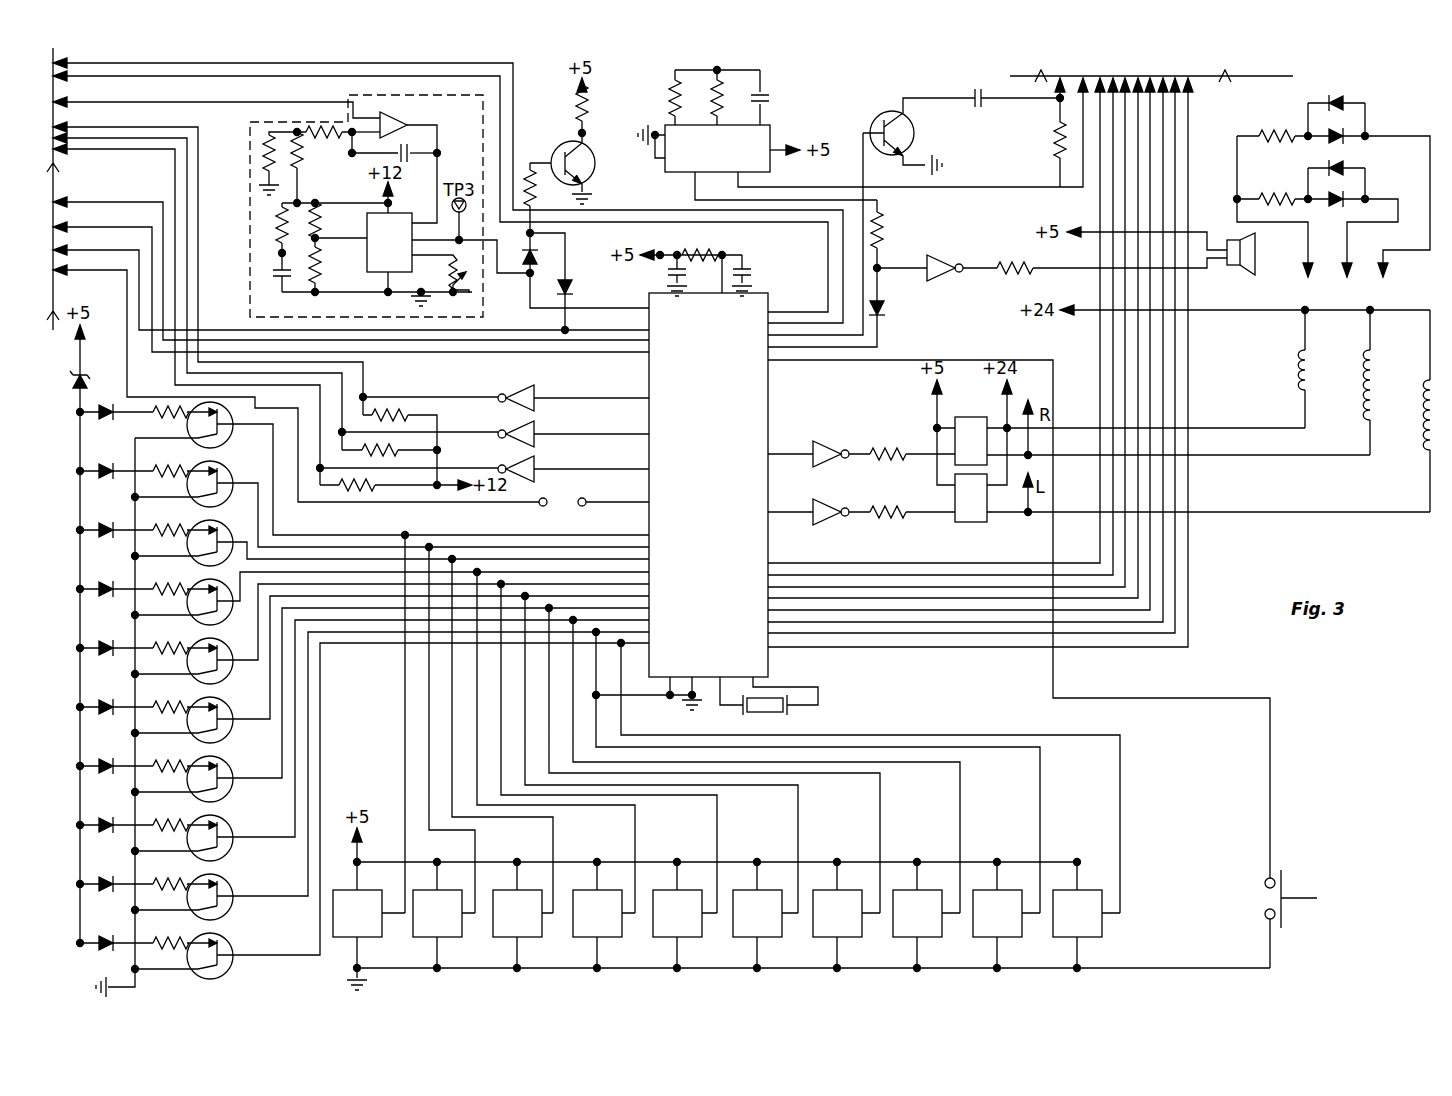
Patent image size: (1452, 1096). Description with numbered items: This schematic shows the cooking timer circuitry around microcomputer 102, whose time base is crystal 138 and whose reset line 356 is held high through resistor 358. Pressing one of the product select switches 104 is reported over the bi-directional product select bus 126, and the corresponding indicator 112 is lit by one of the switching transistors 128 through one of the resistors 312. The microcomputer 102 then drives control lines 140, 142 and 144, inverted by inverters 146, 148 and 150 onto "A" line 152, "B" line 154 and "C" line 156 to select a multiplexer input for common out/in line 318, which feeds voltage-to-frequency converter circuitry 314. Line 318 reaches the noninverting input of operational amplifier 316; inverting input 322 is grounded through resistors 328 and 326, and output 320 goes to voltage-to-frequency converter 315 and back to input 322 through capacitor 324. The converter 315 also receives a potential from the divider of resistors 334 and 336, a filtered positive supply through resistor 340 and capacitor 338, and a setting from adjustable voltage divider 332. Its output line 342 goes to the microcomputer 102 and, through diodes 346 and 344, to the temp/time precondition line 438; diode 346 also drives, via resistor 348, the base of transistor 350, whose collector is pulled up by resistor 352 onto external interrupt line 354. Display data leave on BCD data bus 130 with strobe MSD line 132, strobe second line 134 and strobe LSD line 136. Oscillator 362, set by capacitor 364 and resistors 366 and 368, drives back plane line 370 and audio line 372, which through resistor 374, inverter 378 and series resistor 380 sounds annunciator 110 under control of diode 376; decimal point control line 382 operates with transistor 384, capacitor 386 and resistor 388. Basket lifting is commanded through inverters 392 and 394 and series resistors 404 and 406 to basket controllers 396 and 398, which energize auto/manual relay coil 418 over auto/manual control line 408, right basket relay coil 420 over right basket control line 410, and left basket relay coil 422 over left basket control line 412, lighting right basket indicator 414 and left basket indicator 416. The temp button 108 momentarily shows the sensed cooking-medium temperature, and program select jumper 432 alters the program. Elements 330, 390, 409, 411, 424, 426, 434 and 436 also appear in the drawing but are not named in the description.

The microcomputer 102 is at (708, 485).
The product select switches 104 is at (787, 978).
The temp button 108 is at (1284, 880).
The annunciator 110 is at (1244, 268).
The indicators 112 is at (96, 438).
The product select bus 126 is at (368, 532).
The switching transistors 128 is at (228, 438).
The BCD data bus 130 is at (908, 616).
The strobe MSD line 132 is at (778, 560).
The strobe second line 134 is at (832, 560).
The strobe LSD line 136 is at (880, 566).
The crystal 138 is at (782, 712).
The control line 140 is at (596, 470).
The control line 142 is at (634, 432).
The control line 144 is at (630, 400).
The inverter 146 is at (536, 466).
The inverter 148 is at (536, 430).
The inverter 150 is at (534, 396).
The "A" line 152 is at (117, 152).
The "B" line 154 is at (136, 148).
The "C" line 156 is at (141, 126).
The resistors 312 is at (182, 404).
The voltage-to-frequency converter circuitry 314 is at (248, 273).
The voltage-to-frequency converter 315 is at (389, 242).
The operational amplifier 316 is at (396, 120).
The common out/in line 318 is at (205, 104).
The output 320 is at (439, 138).
The inverting input 322 is at (359, 151).
The capacitor 324 is at (414, 158).
The resistor 326 is at (316, 138).
The resistor 328 is at (262, 161).
The resistor 330 is at (314, 166).
The adjustable voltage divider 332 is at (457, 282).
The resistor 334 is at (322, 216).
The resistor 336 is at (333, 265).
The capacitor 338 is at (282, 281).
The resistor 340 is at (276, 227).
The output line 342 is at (453, 242).
The diode 344 is at (570, 284).
The diode 346 is at (530, 254).
The resistor 348 is at (534, 196).
The transistor 350 is at (560, 154).
The resistor 352 is at (572, 106).
The external interrupt line 354 is at (754, 272).
The reset line 356 is at (742, 266).
The resistor 358 is at (694, 272).
The oscillator 362 is at (704, 148).
The capacitor 364 is at (768, 104).
The resistor 366 is at (668, 84).
The resistor 368 is at (722, 94).
The back plane line 370 is at (972, 184).
The audio line 372 is at (810, 180).
The resistor 374 is at (888, 244).
The diode 376 is at (891, 314).
The inverter 378 is at (950, 260).
The series resistor 380 is at (1012, 280).
The decimal point control line 382 is at (864, 146).
The transistor 384 is at (910, 128).
The capacitor 386 is at (996, 106).
The resistor 388 is at (1052, 154).
The line 390 is at (1002, 360).
The inverter 392 is at (828, 446).
The inverter 394 is at (830, 504).
The basket controller 396 is at (971, 441).
The basket controller 398 is at (971, 498).
The series resistor 404 is at (890, 446).
The series resistor 406 is at (892, 504).
The auto/manual control line 408 is at (1302, 266).
The right motor line 409 is at (1388, 276).
The right basket control line 410 is at (1092, 454).
The left motor line 411 is at (1344, 266).
The left basket control line 412 is at (1062, 516).
The right basket indicator 414 is at (1348, 142).
The left basket indicator 416 is at (1328, 206).
The auto/manual relay coil 418 is at (1298, 380).
The right basket relay coil 420 is at (1365, 412).
The left basket relay coil 422 is at (1425, 448).
The line 424 is at (272, 70).
The line 426 is at (162, 76).
The program select jumper 432 is at (70, 298).
The line 434 is at (132, 230).
The line 436 is at (78, 204).
The temp/time precondition line 438 is at (126, 254).